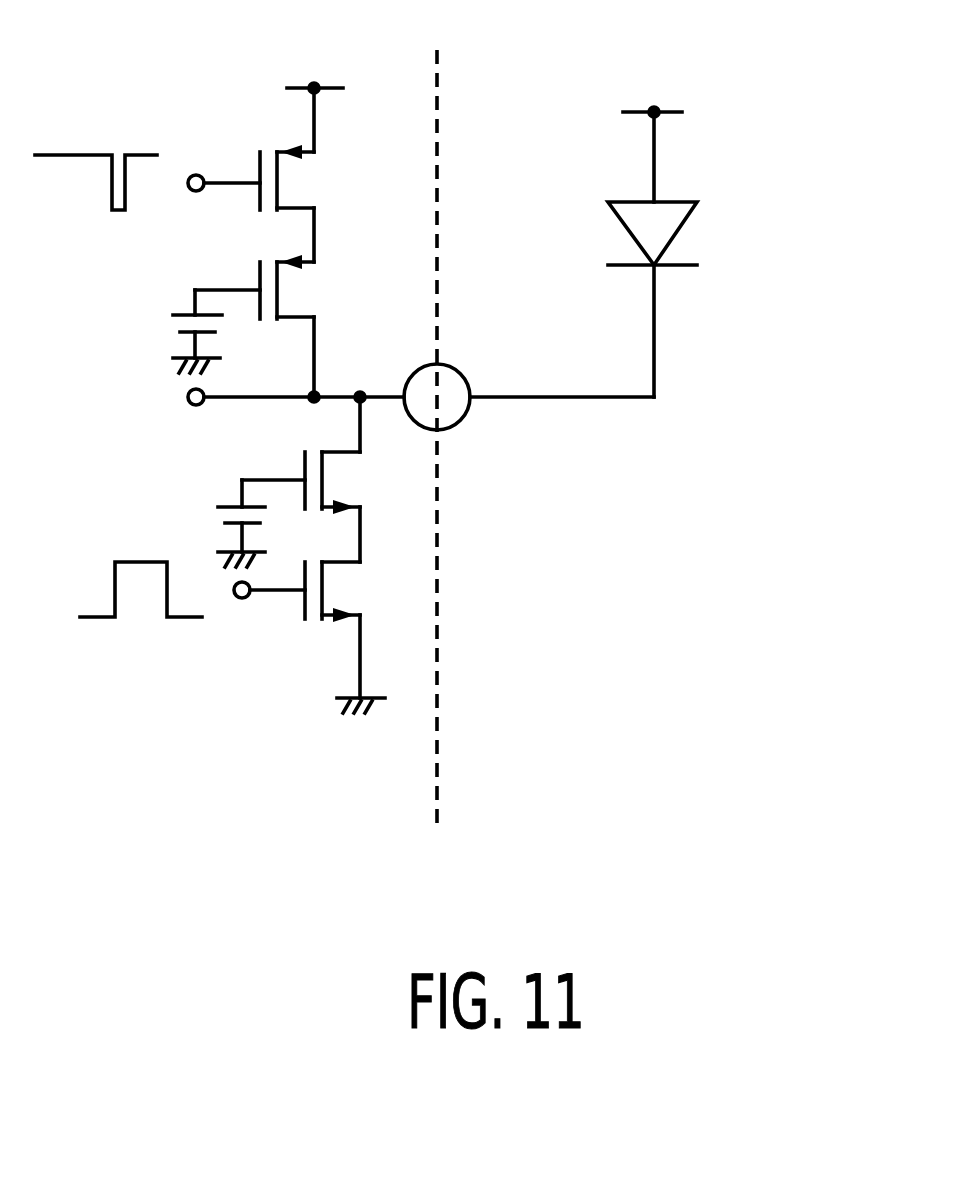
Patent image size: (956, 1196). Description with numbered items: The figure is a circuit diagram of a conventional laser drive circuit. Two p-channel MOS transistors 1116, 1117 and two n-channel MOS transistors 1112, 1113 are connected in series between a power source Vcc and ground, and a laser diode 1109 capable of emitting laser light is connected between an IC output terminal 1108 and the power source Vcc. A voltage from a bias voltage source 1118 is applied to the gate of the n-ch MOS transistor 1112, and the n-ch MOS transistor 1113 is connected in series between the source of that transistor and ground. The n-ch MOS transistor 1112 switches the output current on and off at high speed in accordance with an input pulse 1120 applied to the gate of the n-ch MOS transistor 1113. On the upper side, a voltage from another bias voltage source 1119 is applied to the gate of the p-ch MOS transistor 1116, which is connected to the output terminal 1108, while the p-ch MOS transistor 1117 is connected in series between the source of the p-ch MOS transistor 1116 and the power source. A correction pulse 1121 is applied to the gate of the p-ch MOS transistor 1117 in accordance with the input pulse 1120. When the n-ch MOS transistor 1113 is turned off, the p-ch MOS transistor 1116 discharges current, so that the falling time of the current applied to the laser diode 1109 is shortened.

The IC output terminal 1108 is at (457, 369).
The laser diode 1109 is at (676, 232).
The n-ch MOS transistor 1112 is at (355, 481).
The n-ch MOS transistor 1113 is at (355, 589).
The p-ch MOS transistor 1116 is at (300, 292).
The p-ch MOS transistor 1117 is at (302, 186).
The bias voltage source 1118 is at (212, 515).
The bias voltage source 1119 is at (168, 325).
The input pulse 1120 is at (140, 613).
The correction pulse 1121 is at (116, 148).